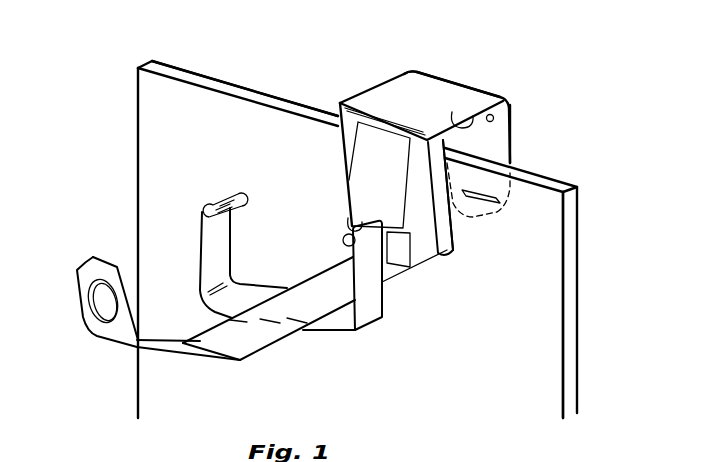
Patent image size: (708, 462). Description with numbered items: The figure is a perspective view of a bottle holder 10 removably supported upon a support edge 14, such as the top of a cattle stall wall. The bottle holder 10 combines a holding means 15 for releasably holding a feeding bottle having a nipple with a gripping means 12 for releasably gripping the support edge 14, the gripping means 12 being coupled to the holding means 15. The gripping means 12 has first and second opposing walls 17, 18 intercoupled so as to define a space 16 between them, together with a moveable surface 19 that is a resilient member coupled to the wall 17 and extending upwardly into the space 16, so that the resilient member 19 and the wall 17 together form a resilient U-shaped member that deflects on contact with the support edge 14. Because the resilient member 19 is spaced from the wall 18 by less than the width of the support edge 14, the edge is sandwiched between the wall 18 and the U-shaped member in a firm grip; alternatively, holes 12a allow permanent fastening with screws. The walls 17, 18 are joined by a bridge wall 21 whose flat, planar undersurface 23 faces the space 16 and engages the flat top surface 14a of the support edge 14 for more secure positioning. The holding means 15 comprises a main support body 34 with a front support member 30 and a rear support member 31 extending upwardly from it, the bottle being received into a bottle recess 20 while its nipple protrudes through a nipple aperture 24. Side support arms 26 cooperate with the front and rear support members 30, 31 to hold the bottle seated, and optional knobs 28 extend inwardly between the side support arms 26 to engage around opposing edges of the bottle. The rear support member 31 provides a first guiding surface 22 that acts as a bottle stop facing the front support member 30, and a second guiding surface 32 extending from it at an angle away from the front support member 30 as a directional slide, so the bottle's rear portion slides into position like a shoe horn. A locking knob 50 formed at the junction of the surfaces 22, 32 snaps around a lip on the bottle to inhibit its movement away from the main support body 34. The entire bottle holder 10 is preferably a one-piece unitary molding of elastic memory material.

The bottle holder 10 is at (370, 72).
The gripping means 12 is at (522, 82).
The holes 12a is at (494, 118).
The support edge 14 is at (230, 80).
The flat top surface 14a is at (564, 178).
The holding means 15 is at (165, 128).
The space 16 is at (457, 228).
The first wall 17 is at (512, 136).
The second wall 18 is at (438, 260).
The moveable surface 19 is at (460, 207).
The bottle recess 20 is at (247, 237).
The bridge wall 21 is at (420, 97).
The first guiding surface 22 is at (397, 258).
The flat undersurface 23 is at (473, 122).
The nipple aperture 24 is at (100, 300).
The side support arms 26 is at (217, 247).
The knobs 28 is at (220, 203).
The front support member 30 is at (128, 332).
The rear support member 31 is at (417, 256).
The second guiding surface 32 is at (377, 153).
The main support body 34 is at (238, 342).
The locking knob 50 is at (360, 223).